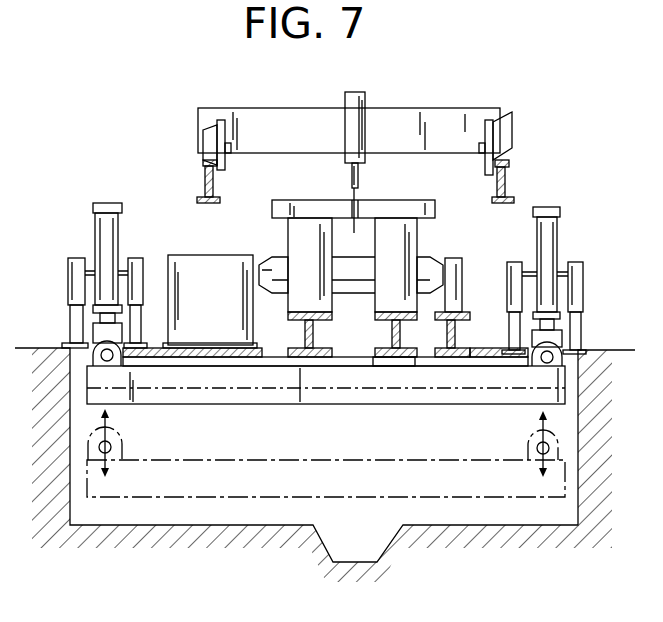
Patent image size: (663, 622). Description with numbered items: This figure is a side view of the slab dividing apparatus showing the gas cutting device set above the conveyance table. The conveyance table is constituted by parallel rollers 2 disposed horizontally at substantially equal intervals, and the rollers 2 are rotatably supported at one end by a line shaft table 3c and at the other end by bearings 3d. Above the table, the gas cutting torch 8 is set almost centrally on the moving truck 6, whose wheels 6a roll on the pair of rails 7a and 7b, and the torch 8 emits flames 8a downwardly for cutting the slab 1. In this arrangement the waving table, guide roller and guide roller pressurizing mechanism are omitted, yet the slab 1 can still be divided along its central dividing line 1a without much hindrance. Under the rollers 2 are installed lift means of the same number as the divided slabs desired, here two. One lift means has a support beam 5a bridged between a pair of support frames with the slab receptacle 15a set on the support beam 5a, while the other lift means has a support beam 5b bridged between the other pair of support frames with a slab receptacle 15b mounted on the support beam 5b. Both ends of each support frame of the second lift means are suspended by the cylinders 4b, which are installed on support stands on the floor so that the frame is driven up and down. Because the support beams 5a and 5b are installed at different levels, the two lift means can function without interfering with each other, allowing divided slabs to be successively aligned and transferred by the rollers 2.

The slab 1 is at (403, 211).
The central dividing line 1a is at (358, 216).
The rollers 2 is at (428, 262).
The line shaft table 3c is at (195, 269).
The bearings 3d is at (460, 276).
The cylinders 4b is at (103, 243).
The support beam 5a is at (187, 365).
The support beam 5b is at (395, 382).
The moving truck 6 is at (403, 124).
The wheels 6a is at (216, 128).
The rail 7a is at (207, 181).
The rail 7b is at (506, 180).
The gas cutting torch 8 is at (352, 178).
The flames 8a is at (352, 197).
The slab receptacle 15a is at (297, 235).
The slab receptacle 15b is at (421, 218).